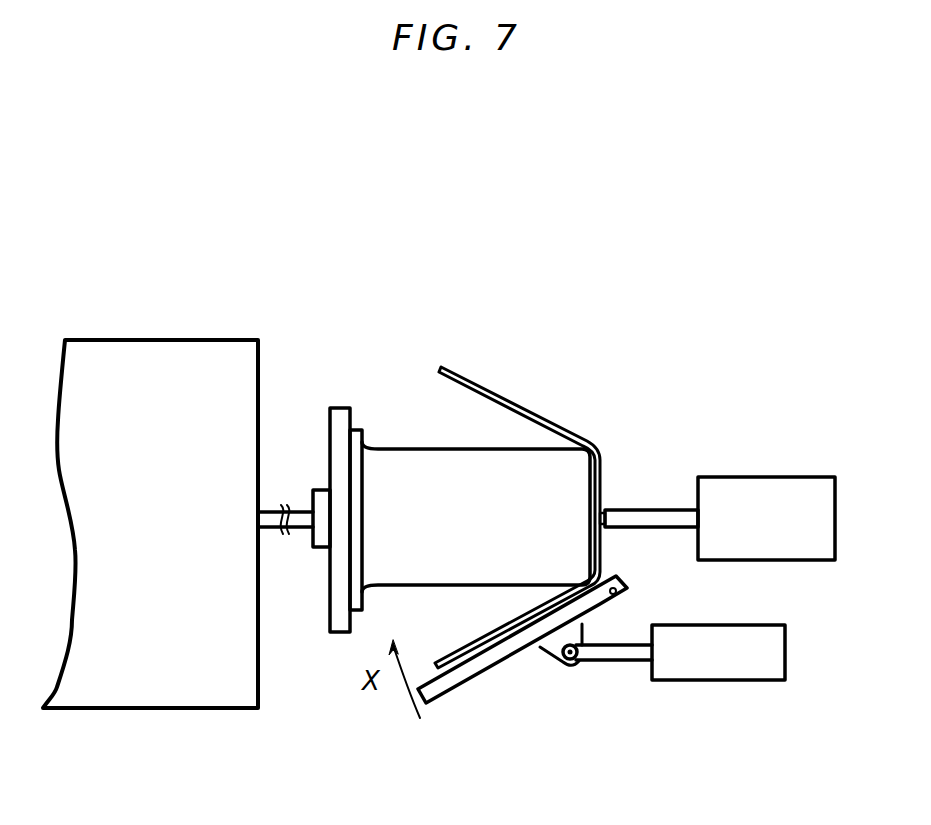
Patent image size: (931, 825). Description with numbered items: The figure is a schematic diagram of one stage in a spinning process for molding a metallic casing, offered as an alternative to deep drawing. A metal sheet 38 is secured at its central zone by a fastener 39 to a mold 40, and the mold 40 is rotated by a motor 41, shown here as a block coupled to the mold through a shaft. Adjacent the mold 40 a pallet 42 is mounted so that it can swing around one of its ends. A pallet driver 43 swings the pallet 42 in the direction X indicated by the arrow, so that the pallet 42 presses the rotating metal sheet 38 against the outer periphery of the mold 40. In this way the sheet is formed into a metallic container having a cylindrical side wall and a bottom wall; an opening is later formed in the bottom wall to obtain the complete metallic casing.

The metal sheet 38 is at (485, 387).
The fastener 39 is at (728, 483).
The mold 40 is at (388, 462).
The motor 41 is at (247, 387).
The pallet 42 is at (498, 657).
The pallet driver 43 is at (737, 667).